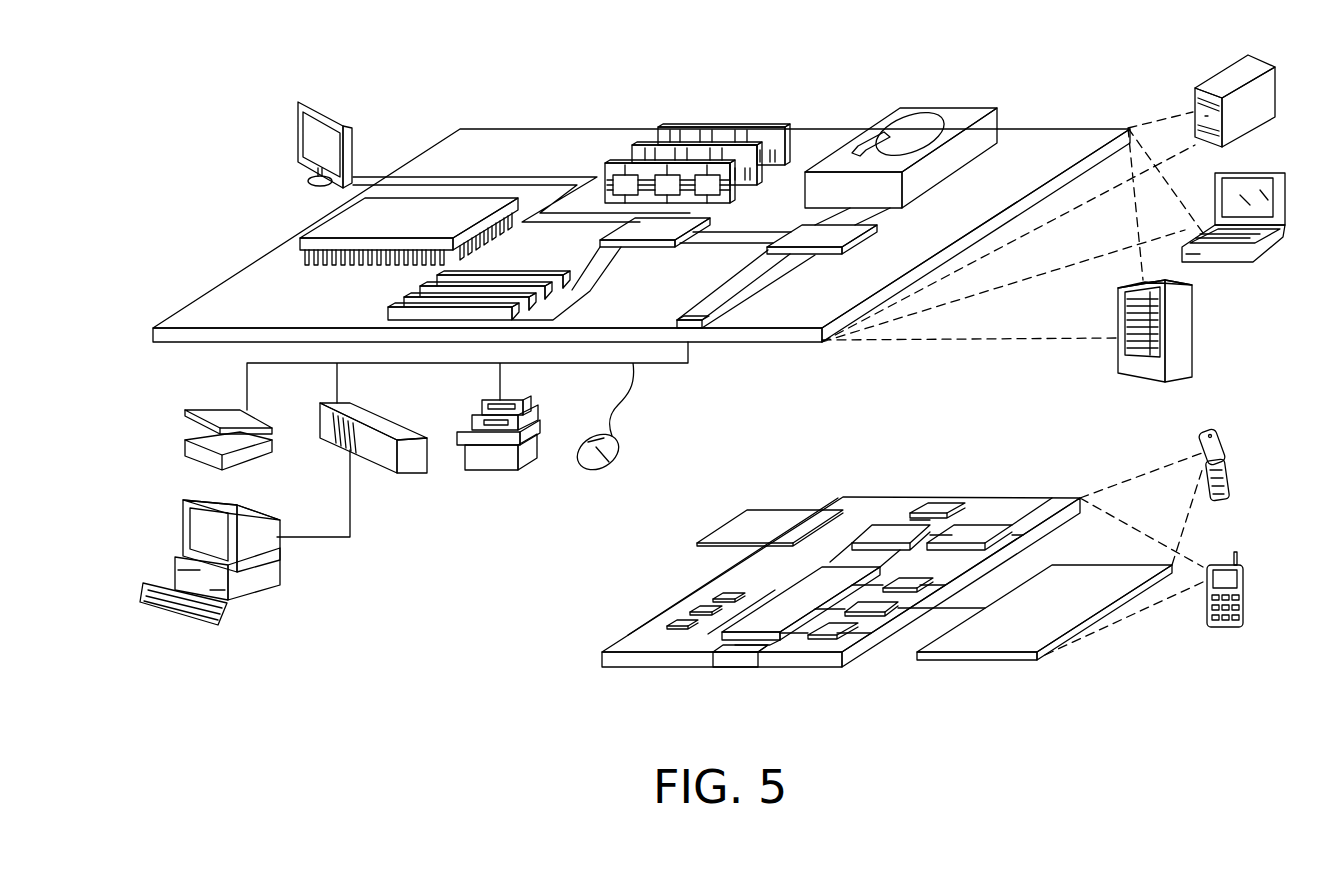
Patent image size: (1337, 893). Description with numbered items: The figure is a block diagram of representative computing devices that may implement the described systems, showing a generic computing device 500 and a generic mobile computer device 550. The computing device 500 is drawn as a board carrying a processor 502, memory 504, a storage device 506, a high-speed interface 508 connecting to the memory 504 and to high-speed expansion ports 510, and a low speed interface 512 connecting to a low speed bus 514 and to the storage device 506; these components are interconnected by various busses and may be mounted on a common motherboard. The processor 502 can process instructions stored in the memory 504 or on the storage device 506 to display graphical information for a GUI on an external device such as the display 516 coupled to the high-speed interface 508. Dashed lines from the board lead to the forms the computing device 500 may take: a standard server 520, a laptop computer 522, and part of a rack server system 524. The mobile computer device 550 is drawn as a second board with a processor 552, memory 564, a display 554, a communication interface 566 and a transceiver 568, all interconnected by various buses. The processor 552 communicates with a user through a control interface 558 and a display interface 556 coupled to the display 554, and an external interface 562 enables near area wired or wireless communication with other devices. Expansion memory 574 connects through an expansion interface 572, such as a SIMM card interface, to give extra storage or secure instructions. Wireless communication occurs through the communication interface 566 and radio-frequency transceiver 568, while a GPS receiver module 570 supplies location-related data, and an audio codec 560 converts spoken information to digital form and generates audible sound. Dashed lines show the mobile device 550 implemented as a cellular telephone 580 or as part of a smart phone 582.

The computing device 500 is at (417, 83).
The processor 502 is at (322, 222).
The memory 504 is at (725, 127).
The storage device 506 is at (938, 108).
The high-speed interface 508 is at (667, 225).
The high-speed expansion ports 510 is at (413, 293).
The low speed interface 512 is at (797, 233).
The low speed bus 514 is at (693, 318).
The display 516 is at (300, 98).
The standard server 520 is at (1215, 80).
The laptop computer 522 is at (1265, 173).
The rack server system 524 is at (1193, 330).
The mobile computer device 550 is at (563, 673).
The processor 552 is at (770, 607).
The display 554 is at (1080, 578).
The display interface 556 is at (845, 629).
The control interface 558 is at (878, 605).
The audio codec 560 is at (913, 578).
The external interface 562 is at (737, 657).
The memory 564 is at (692, 612).
The communication interface 566 is at (892, 527).
The transceiver 568 is at (975, 528).
The GPS receiver module 570 is at (936, 507).
The expansion interface 572 is at (823, 510).
The expansion memory 574 is at (747, 510).
The cellular telephone 580 is at (1212, 428).
The smart phone 582 is at (1223, 565).